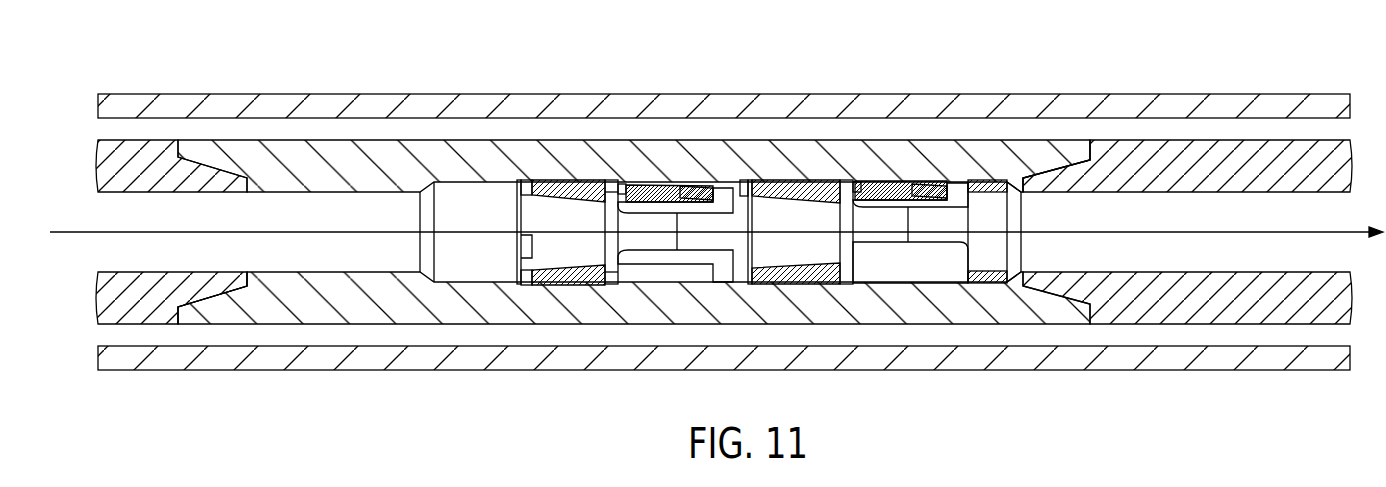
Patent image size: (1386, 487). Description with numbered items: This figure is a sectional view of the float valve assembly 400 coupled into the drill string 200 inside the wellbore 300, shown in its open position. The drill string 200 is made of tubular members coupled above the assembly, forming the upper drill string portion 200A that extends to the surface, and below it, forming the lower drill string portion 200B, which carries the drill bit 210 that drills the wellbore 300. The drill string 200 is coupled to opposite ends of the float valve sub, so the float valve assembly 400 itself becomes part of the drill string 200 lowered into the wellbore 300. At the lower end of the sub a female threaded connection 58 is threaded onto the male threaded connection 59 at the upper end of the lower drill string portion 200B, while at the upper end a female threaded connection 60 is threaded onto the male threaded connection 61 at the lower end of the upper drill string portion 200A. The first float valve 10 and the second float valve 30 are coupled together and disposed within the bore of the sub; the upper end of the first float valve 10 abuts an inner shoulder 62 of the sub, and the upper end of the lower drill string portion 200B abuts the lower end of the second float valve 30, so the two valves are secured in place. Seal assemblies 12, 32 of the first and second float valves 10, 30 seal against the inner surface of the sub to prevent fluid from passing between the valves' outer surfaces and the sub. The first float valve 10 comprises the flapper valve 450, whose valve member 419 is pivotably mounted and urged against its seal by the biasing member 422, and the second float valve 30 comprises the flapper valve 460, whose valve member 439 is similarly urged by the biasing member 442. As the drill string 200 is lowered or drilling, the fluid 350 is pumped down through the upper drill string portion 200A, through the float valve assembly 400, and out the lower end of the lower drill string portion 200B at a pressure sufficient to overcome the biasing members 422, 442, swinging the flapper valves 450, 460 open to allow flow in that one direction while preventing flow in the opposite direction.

The first float valve 10 is at (598, 290).
The seal assembly 12 is at (562, 176).
The second float valve 30 is at (848, 298).
The seal assembly 32 is at (792, 176).
The female threaded connection 58 is at (1045, 175).
The male threaded connection 59 is at (1042, 178).
The female threaded connection 60 is at (204, 314).
The male threaded connection 61 is at (228, 290).
The inner shoulder 62 is at (530, 284).
The drill string 200 is at (136, 330).
The upper drill string portion 200A is at (148, 170).
The lower drill string portion 200B is at (1230, 170).
The drill bit 210 is at (1347, 310).
The wellbore 300 is at (242, 92).
The fluid 350 is at (1225, 232).
The float valve assembly 400 is at (733, 138).
The valve member 419 is at (692, 186).
The biasing member 422 is at (625, 182).
The valve member 439 is at (927, 184).
The biasing member 442 is at (862, 180).
The flapper valve 450 is at (657, 184).
The flapper valve 460 is at (890, 182).